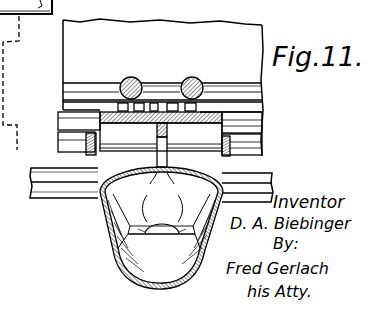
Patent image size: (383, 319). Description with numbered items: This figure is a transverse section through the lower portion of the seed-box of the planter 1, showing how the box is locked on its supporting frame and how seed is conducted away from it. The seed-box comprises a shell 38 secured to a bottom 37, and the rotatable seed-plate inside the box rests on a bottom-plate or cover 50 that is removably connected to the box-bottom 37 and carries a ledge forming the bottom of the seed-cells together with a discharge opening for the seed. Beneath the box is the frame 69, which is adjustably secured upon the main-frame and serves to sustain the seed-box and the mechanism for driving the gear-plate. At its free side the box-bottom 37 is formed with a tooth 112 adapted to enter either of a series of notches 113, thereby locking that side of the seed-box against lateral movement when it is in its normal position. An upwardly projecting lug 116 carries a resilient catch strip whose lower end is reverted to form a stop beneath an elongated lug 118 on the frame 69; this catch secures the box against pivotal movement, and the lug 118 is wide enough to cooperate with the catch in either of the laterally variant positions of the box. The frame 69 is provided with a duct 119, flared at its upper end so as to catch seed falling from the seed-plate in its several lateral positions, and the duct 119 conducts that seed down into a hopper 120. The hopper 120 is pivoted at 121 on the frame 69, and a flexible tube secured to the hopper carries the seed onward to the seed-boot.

The machine 1 is at (162, 13).
The shell 38 is at (195, 33).
The bottom 37 is at (72, 90).
The upwardly projecting lug 116 is at (133, 77).
The tooth 112 is at (163, 103).
The notches 113 is at (200, 87).
The bottom-plate or cover 50 is at (68, 117).
The elongated lug 118 is at (262, 118).
The pivot 121 is at (60, 150).
The frame 69 is at (53, 192).
The hopper 120 is at (120, 252).
The duct 119 is at (158, 218).